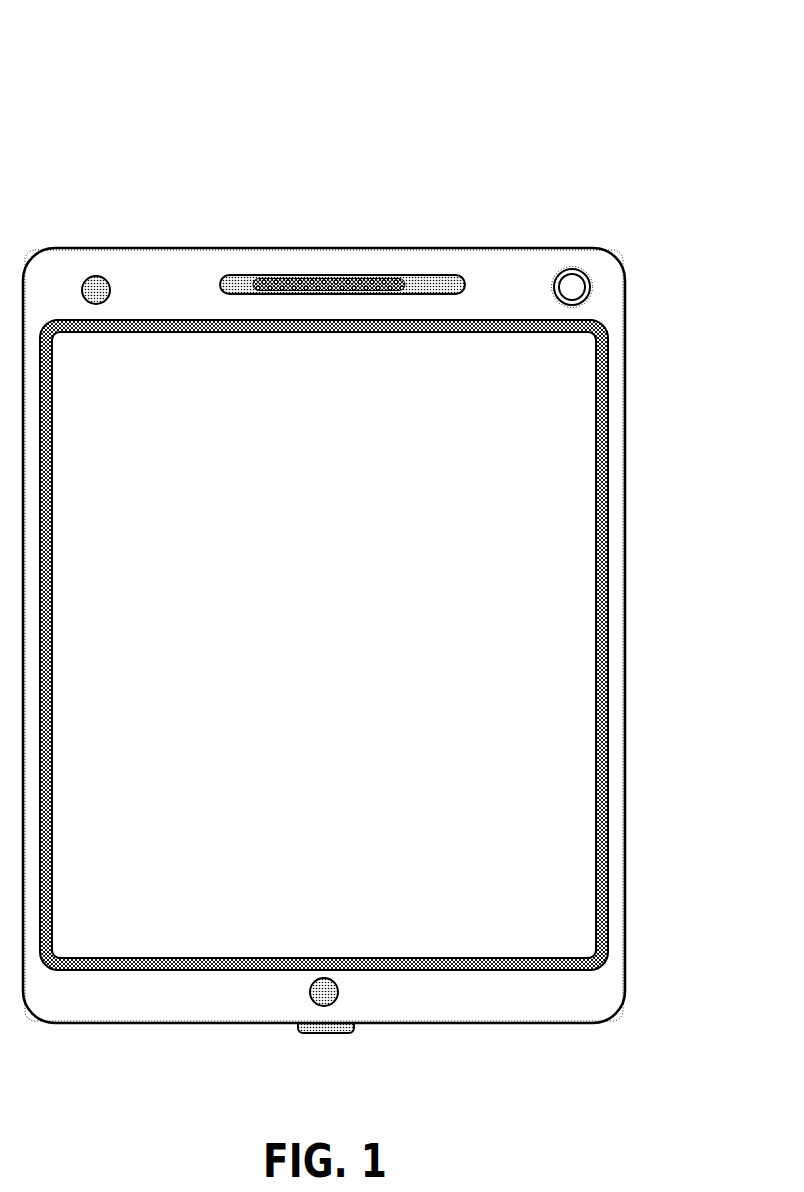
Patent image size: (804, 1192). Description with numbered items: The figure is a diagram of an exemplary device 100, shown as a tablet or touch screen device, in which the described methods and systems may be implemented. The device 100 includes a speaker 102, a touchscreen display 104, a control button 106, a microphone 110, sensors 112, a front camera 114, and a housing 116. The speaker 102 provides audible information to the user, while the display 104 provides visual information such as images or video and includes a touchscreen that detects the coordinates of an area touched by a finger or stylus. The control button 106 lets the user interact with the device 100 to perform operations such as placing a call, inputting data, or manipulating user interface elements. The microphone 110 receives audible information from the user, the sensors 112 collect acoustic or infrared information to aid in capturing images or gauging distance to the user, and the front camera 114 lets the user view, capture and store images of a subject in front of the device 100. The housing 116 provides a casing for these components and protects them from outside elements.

The device 100 is at (148, 44).
The speaker 102 is at (333, 275).
The touchscreen display 104 is at (437, 320).
The control button 106 is at (338, 992).
The microphone 110 is at (338, 1033).
The sensors 112 is at (590, 287).
The front camera 114 is at (96, 276).
The housing 116 is at (608, 445).